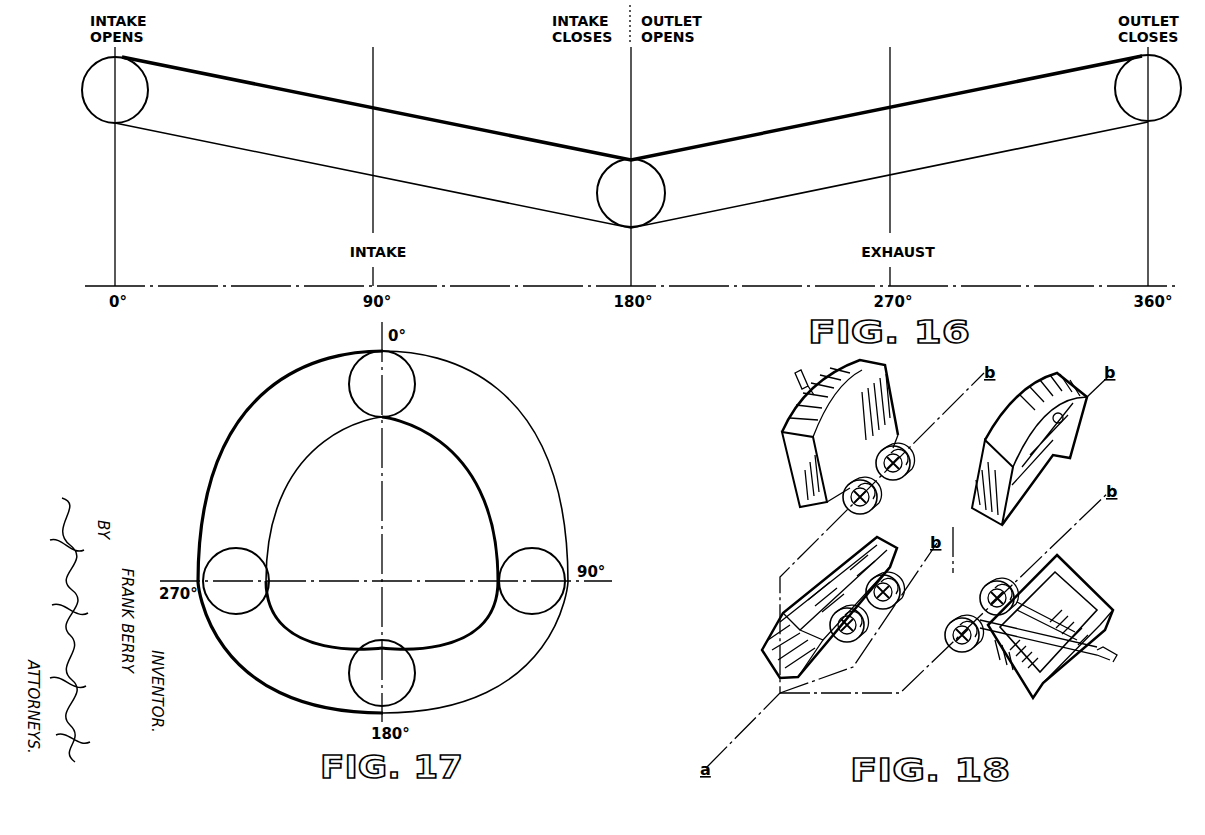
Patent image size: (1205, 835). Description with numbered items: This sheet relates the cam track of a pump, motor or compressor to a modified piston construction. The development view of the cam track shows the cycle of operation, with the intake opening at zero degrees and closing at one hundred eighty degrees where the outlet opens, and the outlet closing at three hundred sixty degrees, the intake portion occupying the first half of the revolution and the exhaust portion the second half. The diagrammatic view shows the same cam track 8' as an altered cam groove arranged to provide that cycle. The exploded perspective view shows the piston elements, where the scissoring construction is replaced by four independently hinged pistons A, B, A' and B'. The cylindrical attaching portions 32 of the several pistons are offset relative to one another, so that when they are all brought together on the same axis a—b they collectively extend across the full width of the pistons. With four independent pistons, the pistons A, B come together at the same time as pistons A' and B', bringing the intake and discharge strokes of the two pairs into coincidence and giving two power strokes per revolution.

In FIG. 18, the cylindrical attaching portions 32 is at (973, 475).
In FIG. 17, the cam 8' is at (401, 532).
In FIG. 18, the piston A is at (1028, 449).
In FIG. 18, the piston B is at (824, 433).
In FIG. 18, the piston A' is at (816, 607).
In FIG. 18, the piston B' is at (1048, 628).